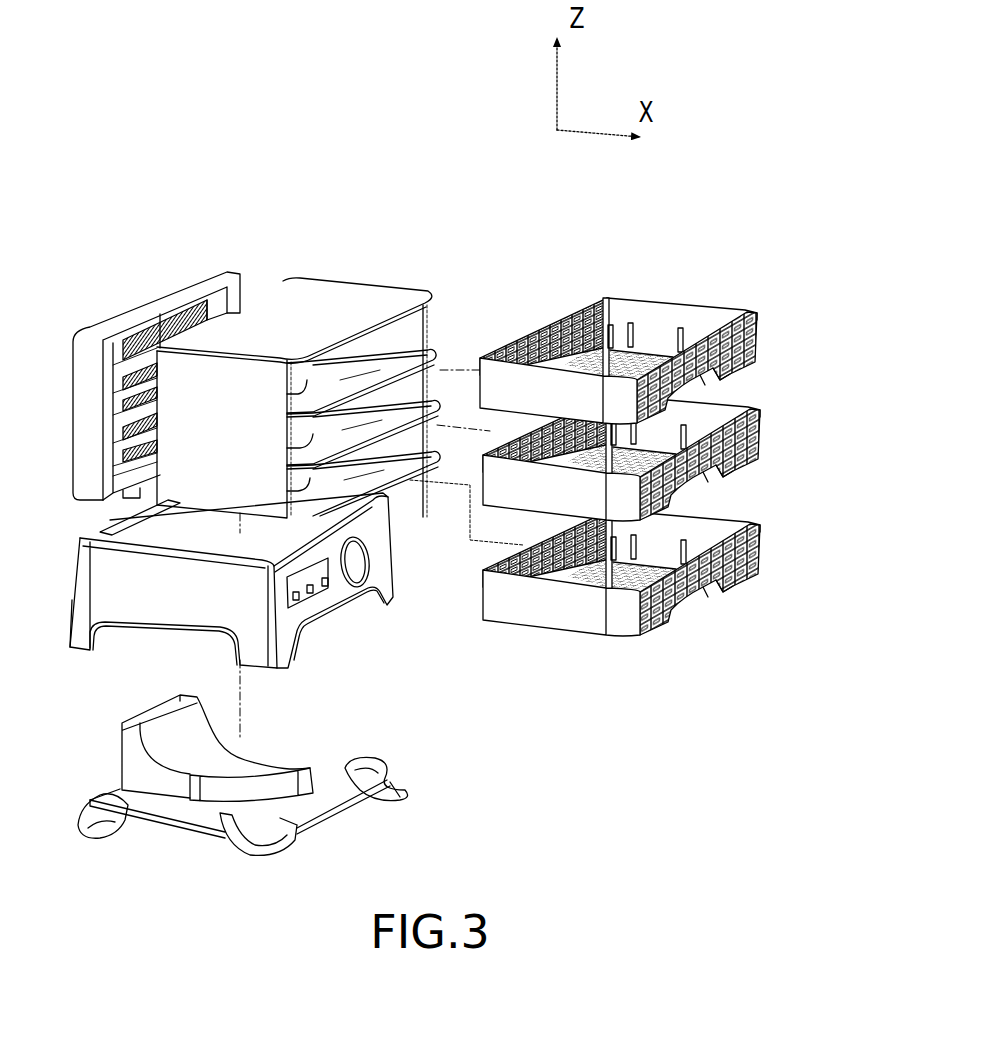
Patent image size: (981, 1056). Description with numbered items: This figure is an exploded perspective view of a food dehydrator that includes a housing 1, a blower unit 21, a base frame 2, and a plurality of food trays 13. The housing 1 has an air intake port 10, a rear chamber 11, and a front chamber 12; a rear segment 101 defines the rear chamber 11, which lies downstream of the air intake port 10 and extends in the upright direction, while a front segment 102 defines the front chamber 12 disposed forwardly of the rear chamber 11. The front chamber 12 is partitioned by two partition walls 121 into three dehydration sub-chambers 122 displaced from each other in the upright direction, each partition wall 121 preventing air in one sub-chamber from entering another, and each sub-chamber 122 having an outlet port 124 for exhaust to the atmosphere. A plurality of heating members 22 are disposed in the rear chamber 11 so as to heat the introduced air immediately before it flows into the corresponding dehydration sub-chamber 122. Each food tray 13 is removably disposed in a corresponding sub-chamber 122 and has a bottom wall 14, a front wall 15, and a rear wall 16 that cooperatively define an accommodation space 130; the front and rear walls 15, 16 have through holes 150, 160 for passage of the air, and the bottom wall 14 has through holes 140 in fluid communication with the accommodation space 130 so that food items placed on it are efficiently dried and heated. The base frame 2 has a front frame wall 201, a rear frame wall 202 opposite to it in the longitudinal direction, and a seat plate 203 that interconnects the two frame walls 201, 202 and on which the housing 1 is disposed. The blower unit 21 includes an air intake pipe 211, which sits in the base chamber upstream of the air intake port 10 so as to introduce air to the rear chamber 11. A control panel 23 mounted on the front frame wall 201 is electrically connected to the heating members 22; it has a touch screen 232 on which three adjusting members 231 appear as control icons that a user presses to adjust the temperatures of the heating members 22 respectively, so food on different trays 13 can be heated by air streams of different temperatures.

The housing 1 is at (233, 205).
The air intake port 10 is at (127, 497).
The rear chamber 11 is at (215, 303).
The rear segment 101 is at (223, 278).
The front segment 102 is at (302, 297).
The front chamber 12 is at (435, 325).
The partition wall 121 is at (430, 404).
The dehydration sub-chamber 122 is at (368, 462).
The outlet port 124 is at (287, 491).
The food tray 13 is at (765, 292).
The accommodation space 130 is at (683, 318).
The bottom wall 14 is at (607, 300).
The through holes 140 is at (647, 347).
The front wall 15 is at (725, 362).
The through holes 150 is at (742, 345).
The rear wall 16 is at (588, 300).
The through holes 160 is at (543, 353).
The base frame 2 is at (460, 655).
The front frame wall 201 is at (383, 572).
The rear frame wall 202 is at (73, 590).
The seat plate 203 is at (180, 540).
The blower unit 21 is at (312, 752).
The air intake pipe 211 is at (172, 740).
The heating members 22 is at (142, 335).
The control panel 23 is at (310, 593).
The adjusting members 231 is at (327, 587).
The touch screen 232 is at (300, 603).